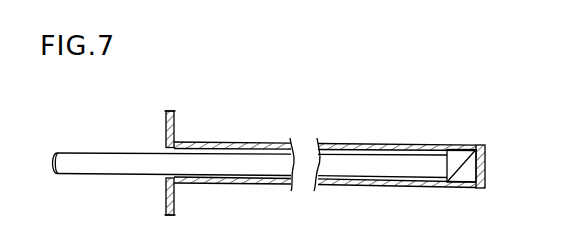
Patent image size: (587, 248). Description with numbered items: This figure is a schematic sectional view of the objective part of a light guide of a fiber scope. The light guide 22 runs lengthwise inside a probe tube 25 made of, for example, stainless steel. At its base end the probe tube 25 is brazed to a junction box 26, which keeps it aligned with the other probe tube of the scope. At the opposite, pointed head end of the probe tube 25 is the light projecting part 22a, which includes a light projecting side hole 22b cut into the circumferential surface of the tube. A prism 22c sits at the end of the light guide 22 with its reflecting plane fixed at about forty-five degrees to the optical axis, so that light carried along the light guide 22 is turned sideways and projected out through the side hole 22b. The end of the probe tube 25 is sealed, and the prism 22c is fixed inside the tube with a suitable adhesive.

The light guide 22 is at (251, 154).
The light projecting part 22a is at (446, 141).
The light projecting side hole 22b is at (458, 148).
The prism 22c is at (457, 164).
The probe tube 25 is at (218, 142).
The junction box 26 is at (177, 121).